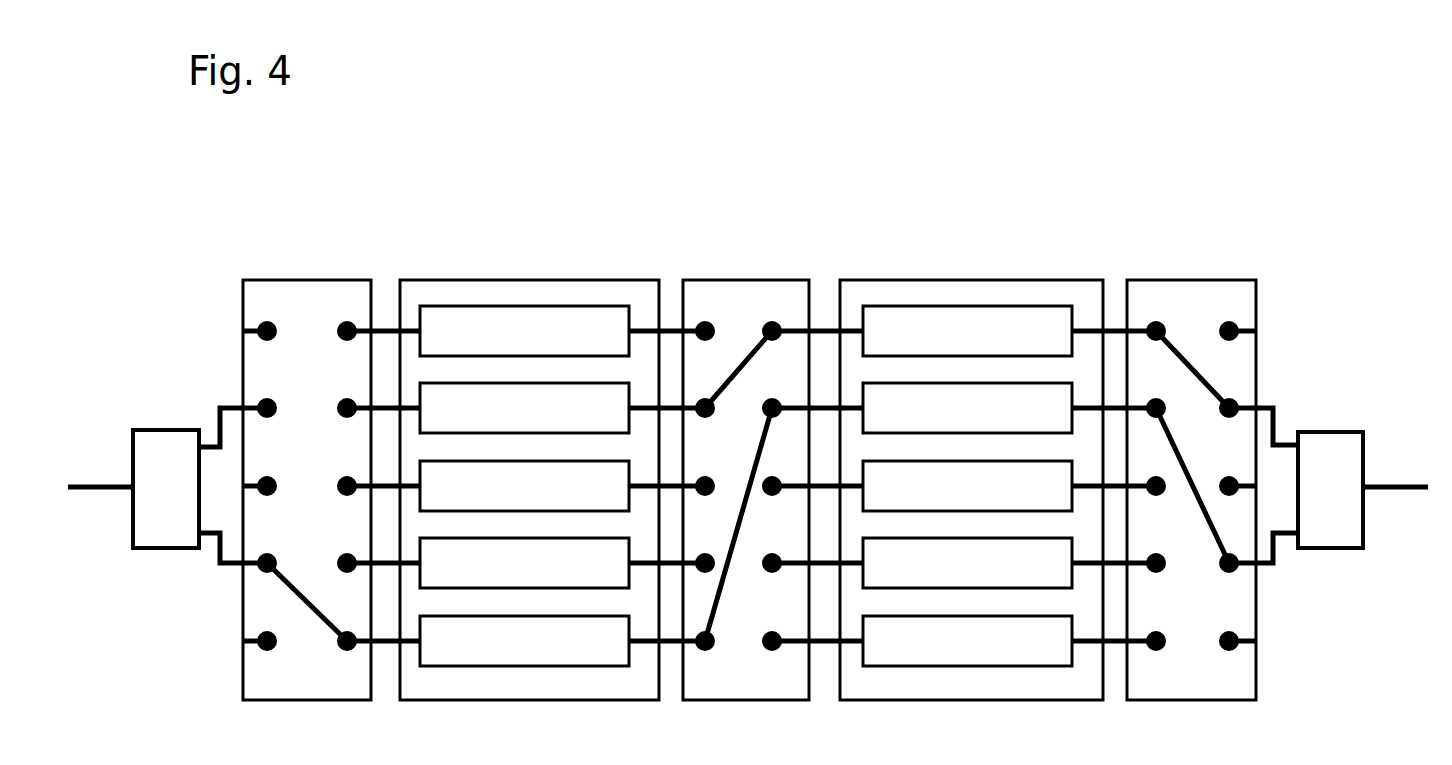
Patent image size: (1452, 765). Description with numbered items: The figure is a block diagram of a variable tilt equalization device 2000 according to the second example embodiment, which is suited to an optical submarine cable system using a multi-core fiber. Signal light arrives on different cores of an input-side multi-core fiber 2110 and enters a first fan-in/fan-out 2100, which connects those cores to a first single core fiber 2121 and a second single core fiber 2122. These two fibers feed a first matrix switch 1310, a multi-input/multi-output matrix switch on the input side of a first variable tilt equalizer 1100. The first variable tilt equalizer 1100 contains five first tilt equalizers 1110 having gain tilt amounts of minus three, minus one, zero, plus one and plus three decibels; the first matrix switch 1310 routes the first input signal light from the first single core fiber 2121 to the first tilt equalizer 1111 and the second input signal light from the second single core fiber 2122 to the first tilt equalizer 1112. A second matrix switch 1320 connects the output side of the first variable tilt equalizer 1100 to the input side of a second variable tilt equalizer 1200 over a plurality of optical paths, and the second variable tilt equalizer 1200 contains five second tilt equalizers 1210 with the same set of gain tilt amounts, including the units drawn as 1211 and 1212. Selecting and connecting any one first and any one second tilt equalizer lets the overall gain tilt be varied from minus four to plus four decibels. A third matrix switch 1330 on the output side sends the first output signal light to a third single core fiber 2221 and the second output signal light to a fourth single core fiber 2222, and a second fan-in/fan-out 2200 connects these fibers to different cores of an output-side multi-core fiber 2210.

The variable tilt equalization device 2000 is at (828, 155).
The first fan-in/fan-out 2100 is at (148, 430).
The input-side multi-core fiber 2110 is at (94, 486).
The first single core fiber 2121 is at (218, 415).
The second single core fiber 2122 is at (217, 558).
The first matrix switch 1310 is at (308, 280).
The first variable tilt equalizer 1100 is at (452, 280).
The first tilt equalizers 1110 is at (548, 305).
The first tilt equalizer 1111 is at (632, 385).
The first tilt equalizer 1112 is at (575, 665).
The second matrix switch 1320 is at (742, 280).
The second variable tilt equalizer 1200 is at (1030, 280).
The -3dB attenuator 1211 is at (928, 305).
The -1dB attenuator 1212 is at (1075, 385).
The second tilt equalizers 1210 is at (917, 665).
The third matrix switch 1330 is at (1183, 280).
The third single core fiber 2221 is at (1277, 418).
The fourth single core fiber 2222 is at (1277, 553).
The second fan-in/fan-out 2200 is at (1345, 432).
The output-side multi-core fiber 2210 is at (1400, 487).